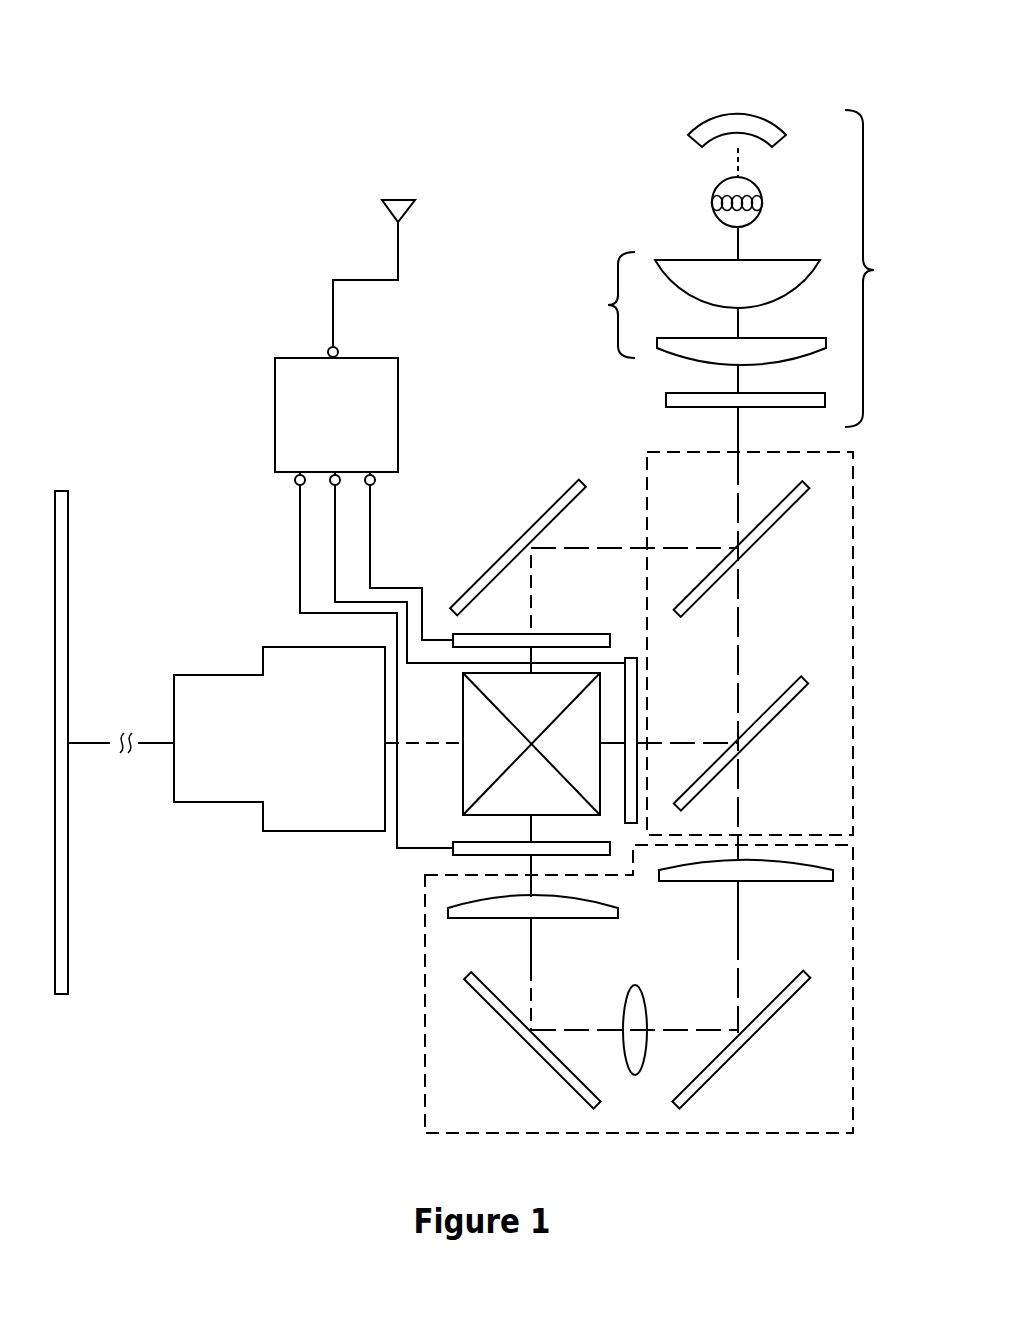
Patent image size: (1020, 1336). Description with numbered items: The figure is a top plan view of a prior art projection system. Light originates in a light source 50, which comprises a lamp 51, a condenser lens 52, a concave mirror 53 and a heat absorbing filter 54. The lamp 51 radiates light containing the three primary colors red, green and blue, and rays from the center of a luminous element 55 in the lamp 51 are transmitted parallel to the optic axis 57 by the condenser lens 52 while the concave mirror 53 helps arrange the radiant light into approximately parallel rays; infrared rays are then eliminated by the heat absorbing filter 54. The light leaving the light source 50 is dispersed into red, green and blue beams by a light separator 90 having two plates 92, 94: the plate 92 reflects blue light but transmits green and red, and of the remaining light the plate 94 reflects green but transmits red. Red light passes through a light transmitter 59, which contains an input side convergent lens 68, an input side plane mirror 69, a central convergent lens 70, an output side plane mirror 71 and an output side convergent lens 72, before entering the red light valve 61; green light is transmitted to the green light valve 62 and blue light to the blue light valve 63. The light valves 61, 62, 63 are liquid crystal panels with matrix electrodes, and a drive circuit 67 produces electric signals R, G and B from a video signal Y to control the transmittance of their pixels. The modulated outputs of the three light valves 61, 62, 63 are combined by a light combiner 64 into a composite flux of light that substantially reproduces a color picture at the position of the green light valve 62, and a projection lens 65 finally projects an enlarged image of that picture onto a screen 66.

The light source 50 is at (743, 279).
The lamp 51 is at (725, 190).
The condenser lens 52 is at (699, 308).
The concave mirror 53 is at (705, 132).
The heat absorbing filter 54 is at (680, 393).
The luminous element 55 is at (752, 192).
The optic axis 57 is at (736, 442).
The light transmitter 59 is at (838, 1042).
The red light valve 61 is at (463, 842).
The green light valve 62 is at (623, 735).
The blue light valve 63 is at (548, 633).
The light combiner 64 is at (478, 759).
The projection lens 65 is at (229, 686).
The screen 66 is at (63, 491).
The drive circuit 67 is at (288, 405).
The input side convergent lens 68 is at (812, 876).
The input side plane mirror 69 is at (814, 985).
The central convergent lens 70 is at (638, 1004).
The output side plane mirror 71 is at (538, 1055).
The output side convergent lens 72 is at (595, 912).
The light separator 90 is at (853, 576).
The plate 92 is at (807, 492).
The plate 94 is at (808, 680).